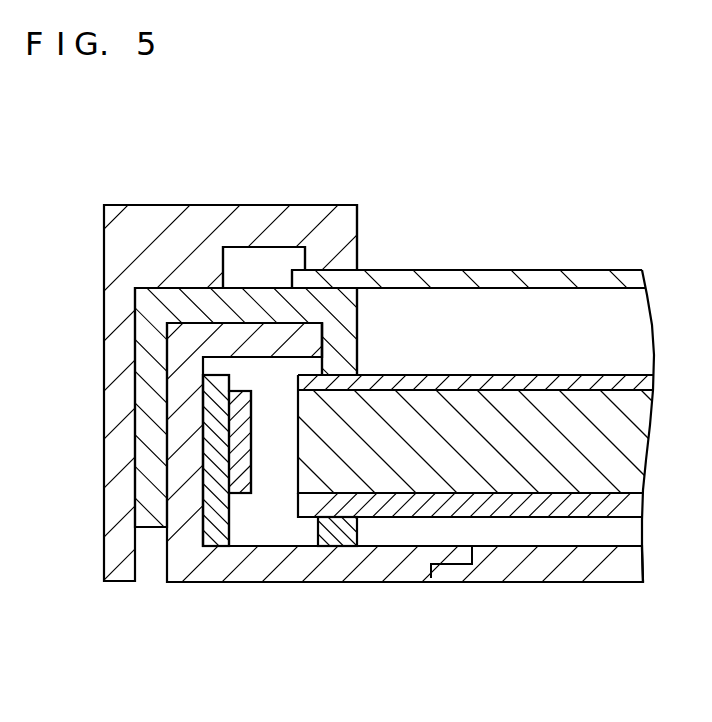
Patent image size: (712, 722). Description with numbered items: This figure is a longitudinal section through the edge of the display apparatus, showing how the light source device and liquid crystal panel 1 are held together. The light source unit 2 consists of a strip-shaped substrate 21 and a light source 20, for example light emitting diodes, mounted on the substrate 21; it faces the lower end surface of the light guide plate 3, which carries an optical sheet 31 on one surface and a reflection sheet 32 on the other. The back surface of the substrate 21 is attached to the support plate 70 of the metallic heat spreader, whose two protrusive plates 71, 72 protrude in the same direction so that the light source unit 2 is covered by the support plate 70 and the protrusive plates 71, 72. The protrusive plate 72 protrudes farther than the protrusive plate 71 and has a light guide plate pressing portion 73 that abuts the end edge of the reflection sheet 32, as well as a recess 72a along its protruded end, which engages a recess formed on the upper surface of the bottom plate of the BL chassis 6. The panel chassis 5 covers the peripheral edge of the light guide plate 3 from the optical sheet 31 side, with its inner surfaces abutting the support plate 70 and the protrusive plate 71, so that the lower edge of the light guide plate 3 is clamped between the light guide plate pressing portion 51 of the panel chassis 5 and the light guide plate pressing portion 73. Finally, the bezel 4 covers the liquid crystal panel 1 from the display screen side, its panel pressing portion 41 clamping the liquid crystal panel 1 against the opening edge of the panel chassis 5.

The liquid crystal panel 1 is at (490, 270).
The light source unit 2 is at (287, 652).
The light source 20 is at (240, 495).
The substrate 21 is at (215, 545).
The light guide plate 3 is at (515, 487).
The optical sheet 31 is at (475, 380).
The reflection sheet 32 is at (477, 513).
The bezel 4 is at (157, 222).
The panel pressing portion 41 is at (350, 222).
The panel chassis 5 is at (140, 378).
The light guide plate pressing portion 51 is at (352, 318).
The BL chassis 6 is at (585, 567).
The support plate 70 is at (170, 560).
The protrusive plate 71 is at (245, 332).
The protrusive plate 72 is at (330, 573).
The recess 72a is at (448, 565).
The light guide plate pressing portion 73 is at (360, 540).